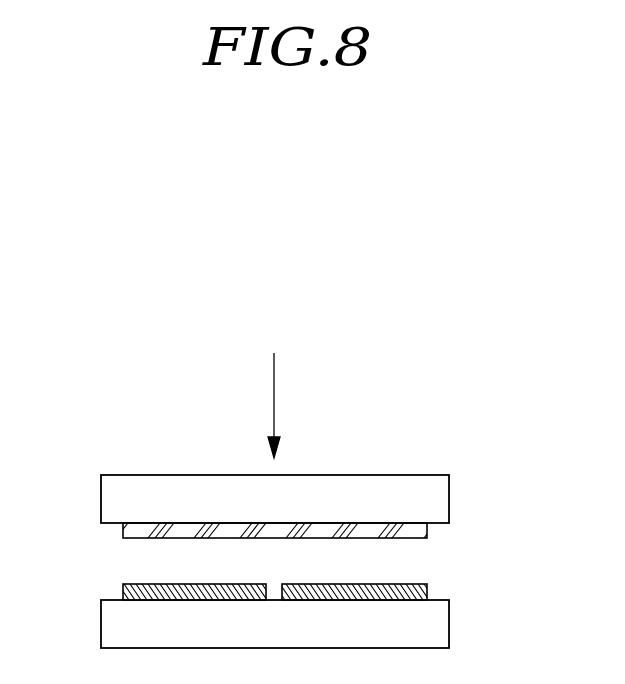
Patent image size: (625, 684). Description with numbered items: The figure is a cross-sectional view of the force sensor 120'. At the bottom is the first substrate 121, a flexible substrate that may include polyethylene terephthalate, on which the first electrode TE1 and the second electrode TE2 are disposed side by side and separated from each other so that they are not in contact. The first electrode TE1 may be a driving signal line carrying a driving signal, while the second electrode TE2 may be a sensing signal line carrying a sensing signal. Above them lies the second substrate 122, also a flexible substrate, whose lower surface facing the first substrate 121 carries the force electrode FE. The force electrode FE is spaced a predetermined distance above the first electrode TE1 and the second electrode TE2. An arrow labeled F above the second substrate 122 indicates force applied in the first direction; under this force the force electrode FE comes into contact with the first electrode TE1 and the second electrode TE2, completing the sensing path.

The force sensor 120' is at (294, 496).
The second substrate 122 is at (438, 508).
The force electrode FE is at (420, 528).
The first electrode TE1 is at (127, 590).
The second electrode TE2 is at (427, 587).
The first substrate 121 is at (438, 627).
The applied force F is at (283, 405).